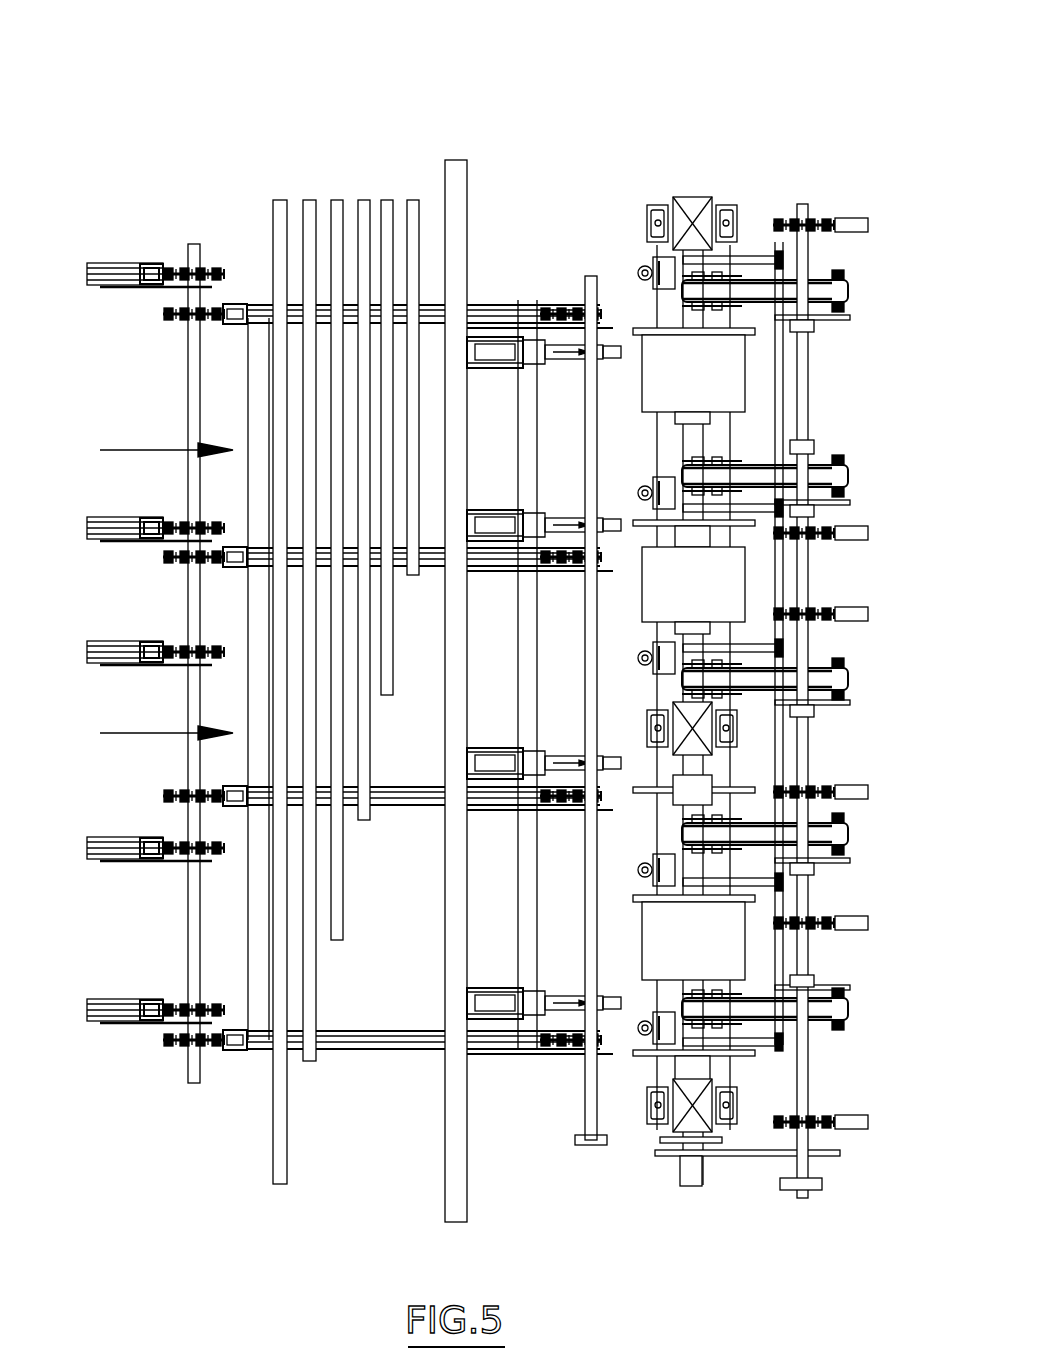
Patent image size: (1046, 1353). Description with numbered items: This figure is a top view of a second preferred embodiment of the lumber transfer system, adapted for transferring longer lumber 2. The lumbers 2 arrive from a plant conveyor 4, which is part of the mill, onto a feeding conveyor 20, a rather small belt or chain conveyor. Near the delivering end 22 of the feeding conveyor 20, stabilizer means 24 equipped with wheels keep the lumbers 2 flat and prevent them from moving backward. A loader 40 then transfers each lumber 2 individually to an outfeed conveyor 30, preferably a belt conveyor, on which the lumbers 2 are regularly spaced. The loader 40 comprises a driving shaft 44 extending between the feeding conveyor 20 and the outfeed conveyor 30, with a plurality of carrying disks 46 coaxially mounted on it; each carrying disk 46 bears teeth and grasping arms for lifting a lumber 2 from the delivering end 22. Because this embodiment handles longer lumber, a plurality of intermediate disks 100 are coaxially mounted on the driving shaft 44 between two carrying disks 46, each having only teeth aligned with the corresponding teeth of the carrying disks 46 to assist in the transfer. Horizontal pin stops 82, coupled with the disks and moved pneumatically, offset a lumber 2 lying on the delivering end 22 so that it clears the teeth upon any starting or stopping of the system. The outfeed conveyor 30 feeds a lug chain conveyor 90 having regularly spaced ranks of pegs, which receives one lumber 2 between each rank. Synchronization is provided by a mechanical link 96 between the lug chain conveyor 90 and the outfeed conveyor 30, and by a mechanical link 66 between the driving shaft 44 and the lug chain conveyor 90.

The lumbers 2 is at (370, 200).
The plant conveyor 4 is at (288, 62).
The feeding conveyor 20 is at (608, 62).
The delivering end 22 is at (632, 315).
The stabilizer means 24 is at (545, 325).
The outfeed conveyor 30 is at (835, 290).
The loader 40 is at (765, 62).
The driving shaft 44 is at (685, 440).
The carrying disks 46 is at (634, 335).
The mechanical link 66 is at (760, 1157).
The horizontal pin stops 82 is at (765, 258).
The lug chain conveyor 90 is at (915, 62).
The mechanical link 96 is at (828, 312).
The intermediate disks 100 is at (745, 775).